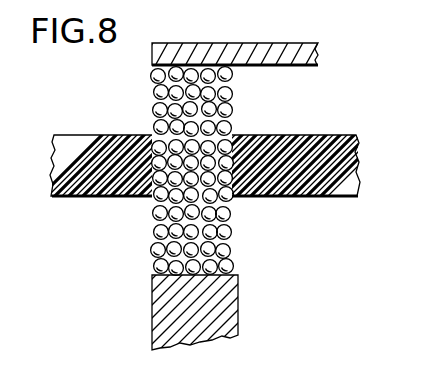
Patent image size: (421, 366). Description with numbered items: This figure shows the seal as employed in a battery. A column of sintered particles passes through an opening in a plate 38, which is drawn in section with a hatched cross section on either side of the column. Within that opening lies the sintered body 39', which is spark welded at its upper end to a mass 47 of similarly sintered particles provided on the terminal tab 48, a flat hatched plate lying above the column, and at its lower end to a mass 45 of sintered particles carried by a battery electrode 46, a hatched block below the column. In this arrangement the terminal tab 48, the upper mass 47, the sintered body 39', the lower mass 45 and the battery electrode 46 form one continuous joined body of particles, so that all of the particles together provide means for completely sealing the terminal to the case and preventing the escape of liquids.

The terminal tab 48 is at (296, 44).
The mass of sintered particles 47 is at (229, 107).
The plate 38 is at (341, 197).
The sintered body 39' is at (214, 187).
The mass of sintered particles 45 is at (230, 237).
The battery electrode 46 is at (238, 305).